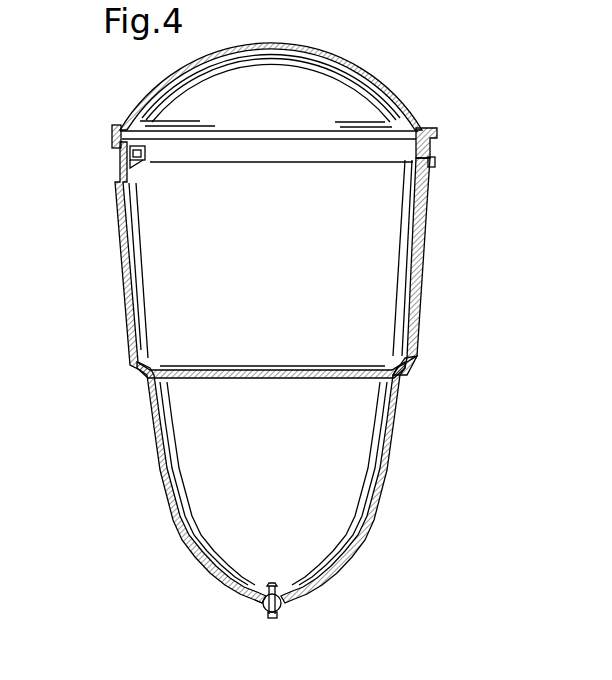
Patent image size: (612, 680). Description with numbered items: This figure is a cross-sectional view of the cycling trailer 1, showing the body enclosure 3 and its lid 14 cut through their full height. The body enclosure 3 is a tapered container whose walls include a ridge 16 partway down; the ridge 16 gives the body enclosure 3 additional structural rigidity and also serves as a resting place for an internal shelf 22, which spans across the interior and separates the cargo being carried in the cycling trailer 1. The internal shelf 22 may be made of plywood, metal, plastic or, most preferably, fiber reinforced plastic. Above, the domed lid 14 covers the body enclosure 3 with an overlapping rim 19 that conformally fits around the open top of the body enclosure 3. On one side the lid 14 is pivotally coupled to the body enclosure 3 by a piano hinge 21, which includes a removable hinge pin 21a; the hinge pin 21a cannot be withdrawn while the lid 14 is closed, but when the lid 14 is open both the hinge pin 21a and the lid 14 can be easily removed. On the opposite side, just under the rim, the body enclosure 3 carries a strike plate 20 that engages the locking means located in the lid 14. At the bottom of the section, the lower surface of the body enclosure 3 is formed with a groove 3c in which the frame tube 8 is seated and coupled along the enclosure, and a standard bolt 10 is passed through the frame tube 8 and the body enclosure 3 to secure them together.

The cycling trailer 1 is at (410, 72).
The lid 14 is at (314, 50).
The overlapping rim 19 is at (112, 133).
The removable hinge pin 21a is at (437, 156).
The piano hinge 21 is at (436, 166).
The strike plate 20 is at (138, 165).
The body enclosure 3 is at (418, 290).
The internal shelf 22 is at (282, 379).
The ridge 16 is at (413, 373).
The groove 3c is at (257, 598).
The frame tube 8 is at (281, 612).
The standard bolt 10 is at (273, 617).